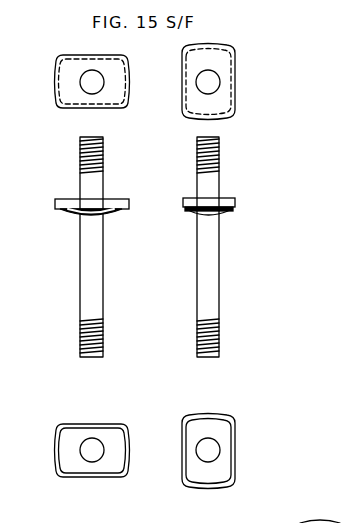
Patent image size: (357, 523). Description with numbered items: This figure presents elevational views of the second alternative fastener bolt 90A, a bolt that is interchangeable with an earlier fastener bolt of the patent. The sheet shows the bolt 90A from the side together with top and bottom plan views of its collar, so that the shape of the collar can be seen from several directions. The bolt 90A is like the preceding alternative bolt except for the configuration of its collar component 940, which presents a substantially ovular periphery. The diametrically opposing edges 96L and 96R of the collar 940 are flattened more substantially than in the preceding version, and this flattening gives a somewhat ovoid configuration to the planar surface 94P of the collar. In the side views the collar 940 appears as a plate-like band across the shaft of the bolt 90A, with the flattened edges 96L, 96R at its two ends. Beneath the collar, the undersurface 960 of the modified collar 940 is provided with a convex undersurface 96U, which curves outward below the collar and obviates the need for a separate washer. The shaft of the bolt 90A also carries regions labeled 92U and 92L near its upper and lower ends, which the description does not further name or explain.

The second alternative fastener bolt 90A is at (105, 277).
The upper threaded portion 92U is at (222, 73).
The lower threaded portion 92L is at (80, 348).
The planar surface 94P is at (88, 63).
The collar component 940 is at (55, 81).
The undersurface 960 is at (98, 435).
The diametrically opposing edge 96L is at (182, 93).
The diametrically opposing edge 96R is at (233, 90).
The convex undersurface 96U is at (193, 218).